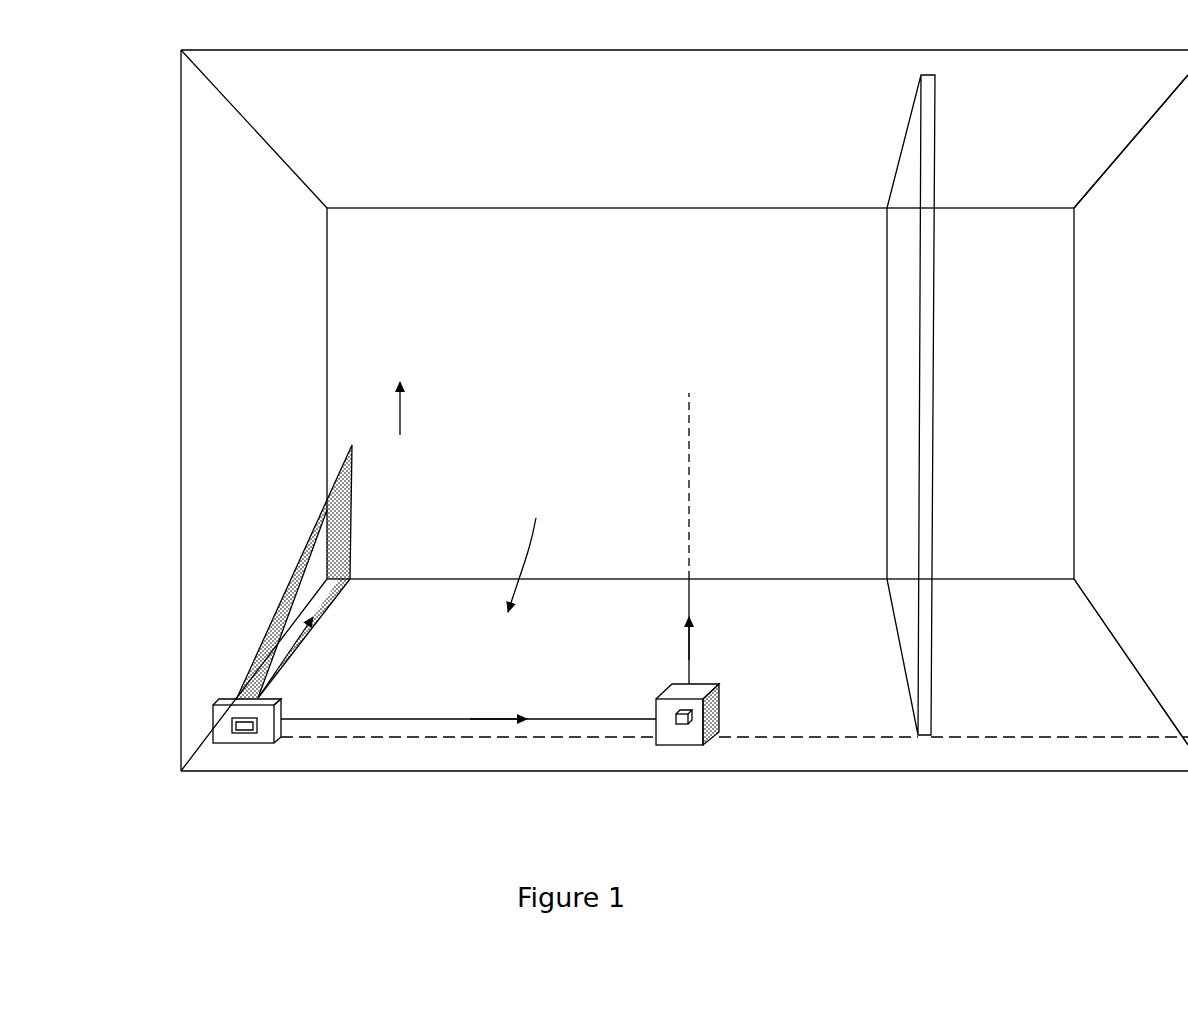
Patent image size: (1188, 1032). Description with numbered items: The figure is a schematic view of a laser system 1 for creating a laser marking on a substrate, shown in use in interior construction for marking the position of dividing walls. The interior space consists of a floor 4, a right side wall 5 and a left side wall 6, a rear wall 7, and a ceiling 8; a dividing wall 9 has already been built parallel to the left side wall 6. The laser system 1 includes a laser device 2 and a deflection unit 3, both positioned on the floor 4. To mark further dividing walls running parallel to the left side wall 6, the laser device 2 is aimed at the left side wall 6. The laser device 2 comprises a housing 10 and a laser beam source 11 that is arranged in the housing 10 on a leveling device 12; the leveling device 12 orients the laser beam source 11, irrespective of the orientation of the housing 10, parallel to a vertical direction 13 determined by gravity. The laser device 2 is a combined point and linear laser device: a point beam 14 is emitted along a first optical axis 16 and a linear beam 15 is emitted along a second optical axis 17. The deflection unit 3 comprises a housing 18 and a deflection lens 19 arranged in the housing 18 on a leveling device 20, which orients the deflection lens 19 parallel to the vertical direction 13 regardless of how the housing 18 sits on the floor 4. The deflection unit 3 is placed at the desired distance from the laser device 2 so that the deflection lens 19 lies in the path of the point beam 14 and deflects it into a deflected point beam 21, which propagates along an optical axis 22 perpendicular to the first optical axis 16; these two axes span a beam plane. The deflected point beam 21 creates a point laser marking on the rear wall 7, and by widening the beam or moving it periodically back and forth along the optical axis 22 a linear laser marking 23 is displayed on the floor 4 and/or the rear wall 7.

The laser system 1 is at (528, 545).
The laser device 2 is at (233, 705).
The deflection unit 3 is at (697, 703).
The floor 4 is at (1062, 621).
The right side wall 5 is at (1148, 390).
The left side wall 6 is at (252, 389).
The rear wall 7 is at (666, 306).
The ceiling 8 is at (666, 134).
The dividing wall 9 is at (902, 377).
The housing 10 is at (223, 722).
The laser beam source 11 is at (245, 730).
The leveling device 12 is at (270, 709).
The vertical direction 13 is at (400, 410).
The point beam 14 is at (433, 717).
The linear beam 15 is at (302, 575).
The first optical axis 16 is at (494, 722).
The second optical axis 17 is at (305, 632).
The housing 18 is at (716, 712).
The deflection lens 19 is at (685, 727).
The leveling device 20 is at (684, 697).
The deflected point beam 21 is at (689, 597).
The optical axis 22 is at (689, 638).
The linear laser marking 23 is at (692, 479).